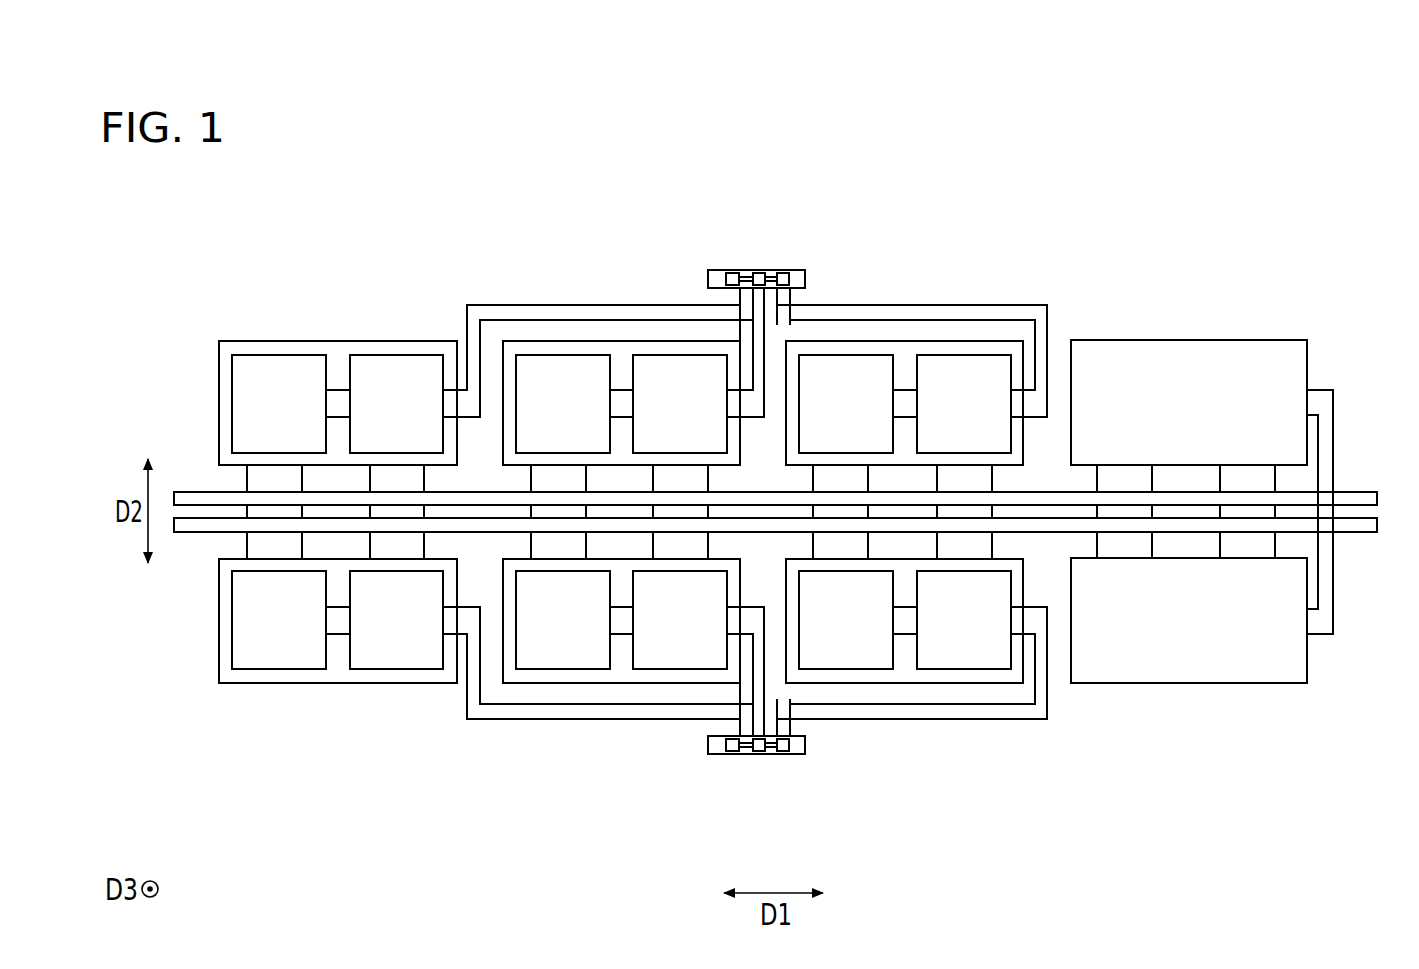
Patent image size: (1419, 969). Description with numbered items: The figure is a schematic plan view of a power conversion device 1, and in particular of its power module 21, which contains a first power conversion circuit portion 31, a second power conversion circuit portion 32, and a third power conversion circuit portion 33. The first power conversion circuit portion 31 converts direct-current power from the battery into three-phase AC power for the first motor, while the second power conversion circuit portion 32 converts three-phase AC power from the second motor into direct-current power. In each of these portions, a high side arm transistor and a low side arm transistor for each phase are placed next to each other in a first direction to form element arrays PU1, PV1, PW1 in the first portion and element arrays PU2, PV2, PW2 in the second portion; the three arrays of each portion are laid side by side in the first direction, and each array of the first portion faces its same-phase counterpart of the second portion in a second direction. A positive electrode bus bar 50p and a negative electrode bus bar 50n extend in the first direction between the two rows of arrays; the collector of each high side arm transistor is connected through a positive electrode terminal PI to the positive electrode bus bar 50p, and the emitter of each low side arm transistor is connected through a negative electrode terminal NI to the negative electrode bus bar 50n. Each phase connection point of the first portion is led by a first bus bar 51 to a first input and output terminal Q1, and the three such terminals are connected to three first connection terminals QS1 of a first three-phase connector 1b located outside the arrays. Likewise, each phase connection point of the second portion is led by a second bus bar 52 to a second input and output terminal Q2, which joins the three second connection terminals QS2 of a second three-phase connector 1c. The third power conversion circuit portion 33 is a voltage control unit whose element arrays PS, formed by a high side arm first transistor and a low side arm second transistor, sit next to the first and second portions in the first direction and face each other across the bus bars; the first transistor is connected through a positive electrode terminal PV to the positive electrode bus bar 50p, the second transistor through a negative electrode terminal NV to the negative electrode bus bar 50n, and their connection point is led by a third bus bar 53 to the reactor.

The power conversion device 1 is at (1187, 195).
The first three-phase connector 1b is at (720, 270).
The second three-phase connector 1c is at (720, 754).
The power module 21 is at (1068, 266).
The first power conversion circuit portion 31 is at (181, 393).
The second power conversion circuit portion 32 is at (181, 632).
The third power conversion circuit portion 33 is at (1279, 317).
The positive electrode bus bar 50p is at (1355, 498).
The negative electrode bus bar 50n is at (1355, 527).
The first bus bar 51 is at (479, 305).
The second bus bar 52 is at (479, 719).
The third bus bar 53 is at (1323, 397).
The negative electrode terminal NI is at (271, 478).
The positive electrode terminal PI is at (404, 478).
The element array PU1 is at (318, 341).
The element array PV1 is at (560, 341).
The element array PW1 is at (900, 341).
The element array PU2 is at (314, 683).
The element array PV2 is at (560, 683).
The element array PW2 is at (900, 683).
The first input and output terminal Q1 is at (767, 323).
The second input and output terminal Q2 is at (767, 700).
The first connection terminals QS1 is at (783, 270).
The second connection terminals QS2 is at (783, 754).
The negative electrode terminal NV is at (1125, 478).
The positive electrode terminal PV is at (1250, 478).
The element arrays PS is at (1189, 328).